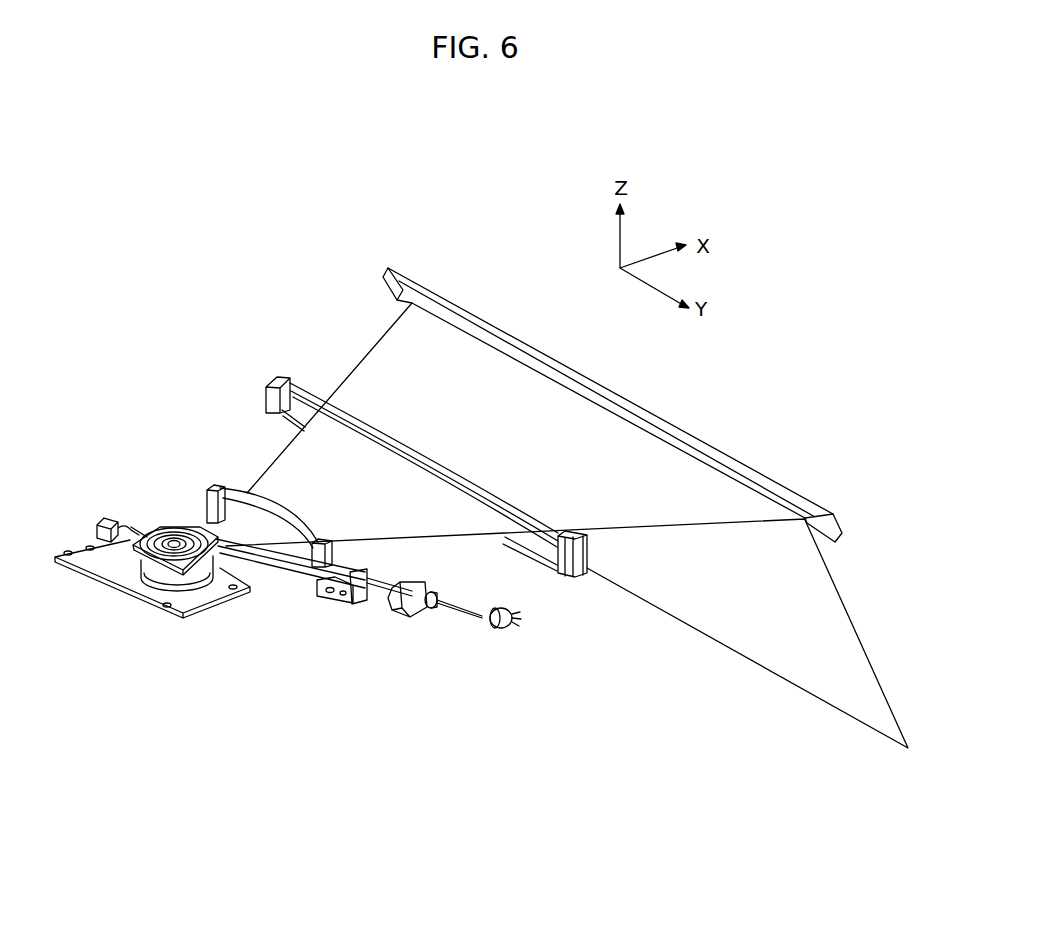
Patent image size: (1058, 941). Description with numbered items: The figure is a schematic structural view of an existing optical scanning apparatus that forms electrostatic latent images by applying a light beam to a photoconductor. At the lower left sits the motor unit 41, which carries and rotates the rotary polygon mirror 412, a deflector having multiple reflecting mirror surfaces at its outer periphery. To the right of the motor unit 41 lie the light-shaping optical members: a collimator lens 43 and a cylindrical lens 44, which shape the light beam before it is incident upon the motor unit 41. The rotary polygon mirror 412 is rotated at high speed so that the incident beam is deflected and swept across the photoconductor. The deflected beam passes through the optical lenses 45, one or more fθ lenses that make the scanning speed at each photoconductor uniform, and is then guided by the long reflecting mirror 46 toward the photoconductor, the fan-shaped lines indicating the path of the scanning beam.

The motor unit 41 is at (155, 585).
The rotary polygon mirror 412 is at (123, 552).
The collimator lens 43 is at (432, 610).
The cylindrical lens 44 is at (397, 613).
The optical lenses 45 is at (213, 487).
The reflecting mirror 46 is at (407, 283).